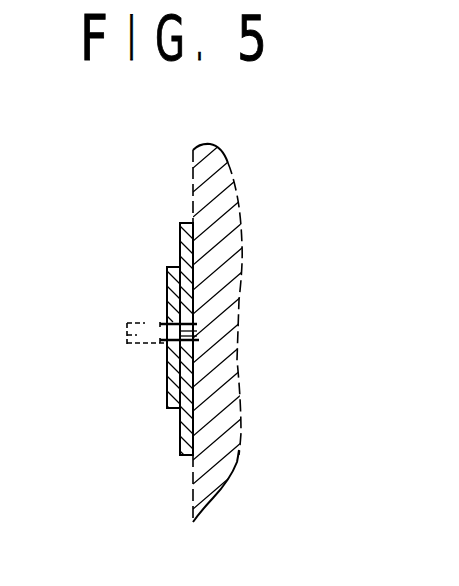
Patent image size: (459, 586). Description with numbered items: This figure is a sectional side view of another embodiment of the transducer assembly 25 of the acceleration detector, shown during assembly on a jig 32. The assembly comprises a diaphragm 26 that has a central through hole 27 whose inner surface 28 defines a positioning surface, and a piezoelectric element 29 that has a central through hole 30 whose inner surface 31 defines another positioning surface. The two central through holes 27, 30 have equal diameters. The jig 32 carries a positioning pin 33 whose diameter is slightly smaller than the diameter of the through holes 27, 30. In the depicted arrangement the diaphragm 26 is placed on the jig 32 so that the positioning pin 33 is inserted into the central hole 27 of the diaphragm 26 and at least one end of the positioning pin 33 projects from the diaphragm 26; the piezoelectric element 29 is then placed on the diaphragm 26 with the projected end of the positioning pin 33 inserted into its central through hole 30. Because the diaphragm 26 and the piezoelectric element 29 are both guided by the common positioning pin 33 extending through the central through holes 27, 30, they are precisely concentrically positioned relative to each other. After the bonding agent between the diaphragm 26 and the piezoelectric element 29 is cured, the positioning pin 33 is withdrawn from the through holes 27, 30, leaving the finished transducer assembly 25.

The transducer assembly 25 is at (193, 235).
The diaphragm 26 is at (180, 224).
The central through hole 27 is at (188, 341).
The inner surface 28 is at (188, 326).
The piezoelectric element 29 is at (168, 280).
The central through hole 30 is at (167, 323).
The inner surface 31 is at (167, 342).
The jig 32 is at (212, 445).
The positioning pin 33 is at (127, 338).